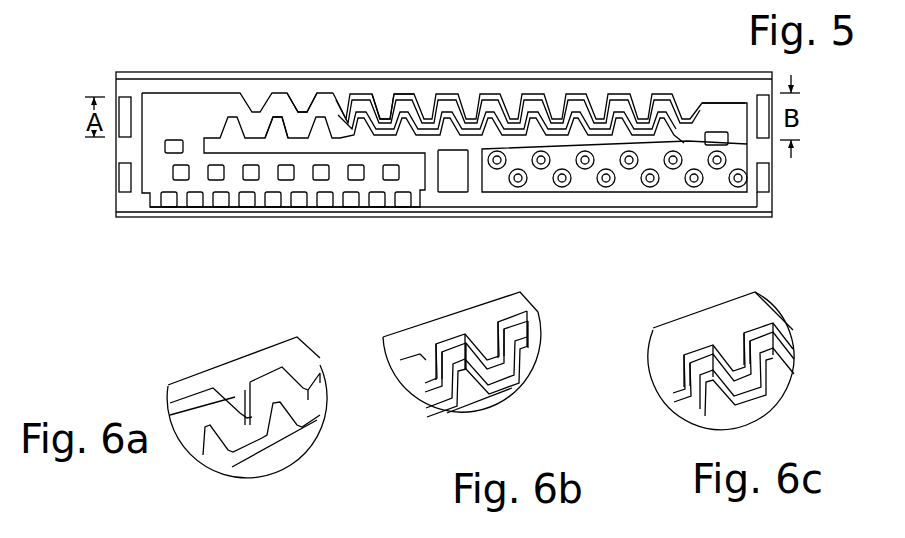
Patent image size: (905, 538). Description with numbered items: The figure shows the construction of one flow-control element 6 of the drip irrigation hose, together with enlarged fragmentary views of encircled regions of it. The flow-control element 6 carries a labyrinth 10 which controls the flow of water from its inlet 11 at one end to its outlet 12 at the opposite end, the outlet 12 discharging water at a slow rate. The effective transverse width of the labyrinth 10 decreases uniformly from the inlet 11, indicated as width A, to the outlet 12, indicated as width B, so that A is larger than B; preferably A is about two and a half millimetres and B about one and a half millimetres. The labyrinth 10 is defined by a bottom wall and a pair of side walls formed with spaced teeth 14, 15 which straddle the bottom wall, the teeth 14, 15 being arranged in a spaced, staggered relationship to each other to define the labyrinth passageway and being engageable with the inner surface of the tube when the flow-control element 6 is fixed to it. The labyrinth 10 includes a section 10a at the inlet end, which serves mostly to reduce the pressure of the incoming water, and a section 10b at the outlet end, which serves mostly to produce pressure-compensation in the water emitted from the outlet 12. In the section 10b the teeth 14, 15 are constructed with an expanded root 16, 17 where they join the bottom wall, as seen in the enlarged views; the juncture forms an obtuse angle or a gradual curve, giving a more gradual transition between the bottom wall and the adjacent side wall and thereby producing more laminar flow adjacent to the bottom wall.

In FIG. 5, the flow-control element 6 is at (240, 69).
In FIG. 5, the labyrinth 10 is at (448, 86).
In FIG. 5, the labyrinth section at the inlet end 10a is at (277, 98).
In FIG. 5, the labyrinth section at the outlet end 10b is at (620, 99).
In FIG. 6B, the labyrinth section at the outlet end 10b is at (552, 527).
In FIG. 5, the inlet 11 is at (259, 201).
In FIG. 5, the outlet 12 is at (628, 183).
In FIG. 5, the teeth 14 is at (275, 123).
In FIG. 6A, the teeth 14 is at (215, 453).
In FIG. 6B, the teeth 14 is at (470, 385).
In FIG. 5, the teeth 15 is at (302, 110).
In FIG. 6A, the teeth 15 is at (242, 414).
In FIG. 6B, the teeth 15 is at (495, 332).
In FIG. 5, the expanded root 16 is at (379, 104).
In FIG. 6B, the expanded root 16 is at (470, 342).
In FIG. 6C, the expanded root 16 is at (733, 362).
In FIG. 5, the expanded root 17 is at (399, 102).
In FIG. 6B, the expanded root 17 is at (527, 323).
In FIG. 6C, the expanded root 17 is at (747, 382).